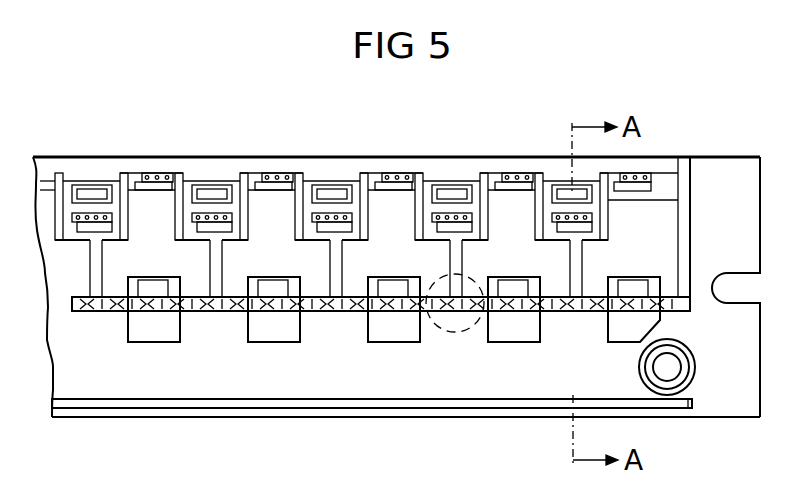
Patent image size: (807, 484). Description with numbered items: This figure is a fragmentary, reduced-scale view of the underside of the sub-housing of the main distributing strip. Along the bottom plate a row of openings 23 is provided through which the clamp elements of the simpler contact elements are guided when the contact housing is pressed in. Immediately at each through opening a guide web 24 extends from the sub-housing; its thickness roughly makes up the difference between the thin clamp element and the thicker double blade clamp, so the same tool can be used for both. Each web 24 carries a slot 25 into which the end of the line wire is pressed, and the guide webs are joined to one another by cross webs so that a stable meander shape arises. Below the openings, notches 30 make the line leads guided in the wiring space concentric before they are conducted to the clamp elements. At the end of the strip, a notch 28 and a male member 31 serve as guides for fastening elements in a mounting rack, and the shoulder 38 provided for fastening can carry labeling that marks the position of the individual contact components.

The openings 23 is at (366, 206).
The guide web 24 is at (177, 175).
The slot 25 is at (153, 173).
The notch 28 is at (740, 283).
The notches 30 is at (515, 312).
The male member 31 is at (684, 353).
The shoulder 38 is at (725, 398).